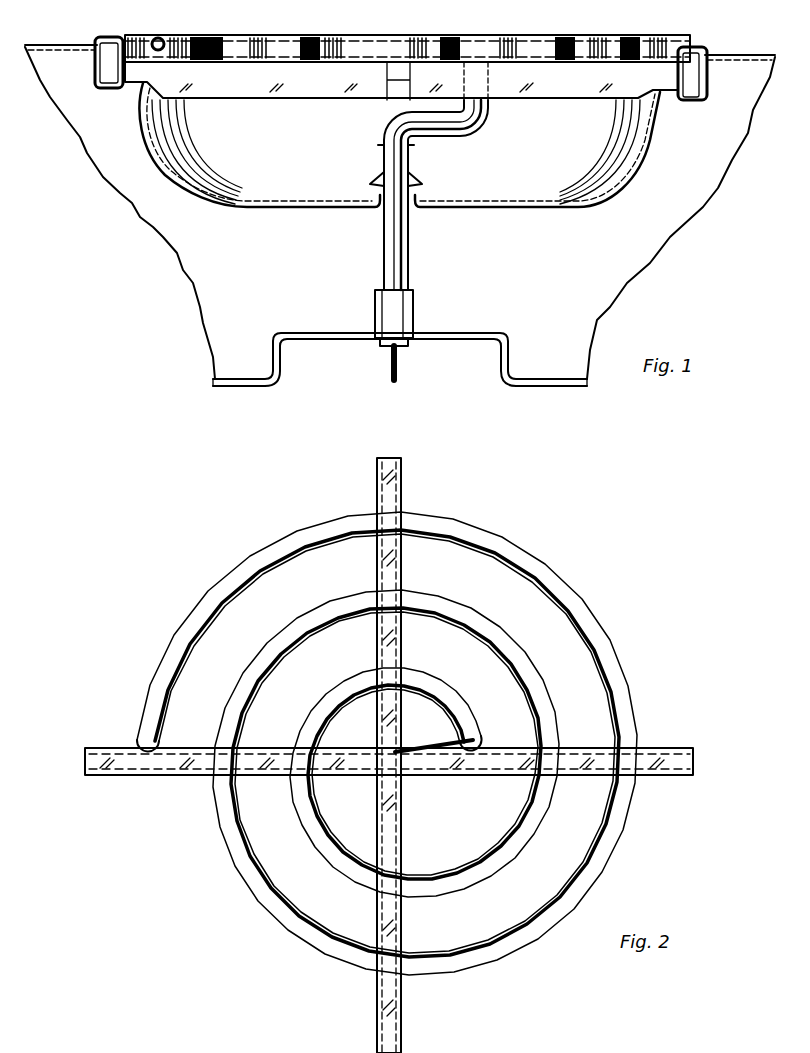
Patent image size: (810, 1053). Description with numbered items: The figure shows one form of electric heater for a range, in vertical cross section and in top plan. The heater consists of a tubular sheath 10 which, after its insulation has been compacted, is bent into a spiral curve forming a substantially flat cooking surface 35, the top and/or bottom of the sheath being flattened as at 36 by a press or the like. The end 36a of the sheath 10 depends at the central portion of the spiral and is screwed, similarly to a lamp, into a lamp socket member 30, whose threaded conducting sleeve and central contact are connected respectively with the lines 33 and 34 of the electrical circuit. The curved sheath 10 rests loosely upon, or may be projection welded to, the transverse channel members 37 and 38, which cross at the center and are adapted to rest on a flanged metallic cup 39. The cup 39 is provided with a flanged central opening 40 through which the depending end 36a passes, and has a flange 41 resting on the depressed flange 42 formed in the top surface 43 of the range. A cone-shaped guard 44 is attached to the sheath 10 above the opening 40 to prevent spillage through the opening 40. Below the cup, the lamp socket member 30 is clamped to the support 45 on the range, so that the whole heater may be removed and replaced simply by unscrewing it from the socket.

In FIG. 1, the tubular sheath 10 is at (393, 233).
In FIG. 2, the tubular sheath 10 is at (435, 522).
In FIG. 1, the lamp socket member 30 is at (413, 310).
In FIG. 1, the line 33 is at (390, 365).
In FIG. 1, the line 34 is at (398, 365).
In FIG. 1, the cooking surface 35 is at (375, 37).
In FIG. 1, the flattened portion 36 is at (158, 38).
In FIG. 1, the end of the sheath 36a is at (408, 268).
In FIG. 2, the transverse channel member 37 is at (401, 583).
In FIG. 1, the transverse channel member 38 is at (577, 88).
In FIG. 2, the transverse channel member 38 is at (577, 757).
In FIG. 1, the flanged metallic cup 39 is at (650, 147).
In FIG. 1, the flanged central opening 40 is at (415, 193).
In FIG. 1, the flange 41 is at (683, 100).
In FIG. 1, the depressed flange 42 is at (693, 100).
In FIG. 1, the top surface of the range 43 is at (733, 58).
In FIG. 1, the cone-shaped guard 44 is at (417, 170).
In FIG. 1, the support 45 is at (500, 333).